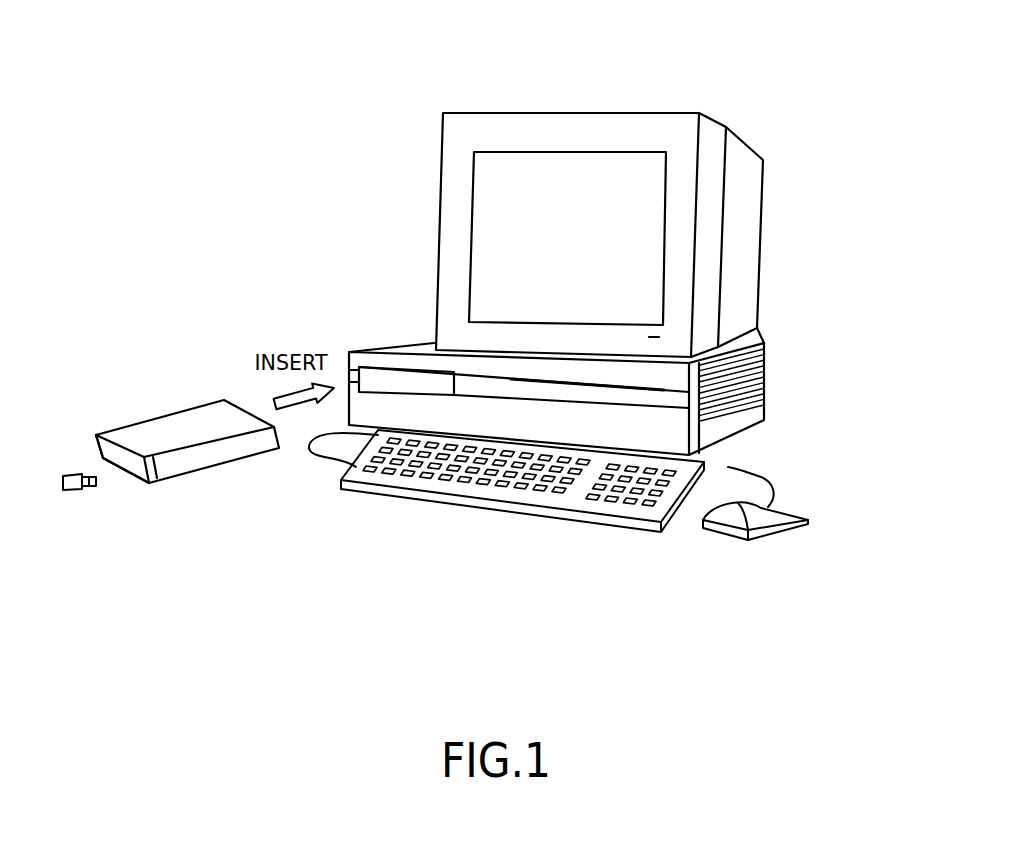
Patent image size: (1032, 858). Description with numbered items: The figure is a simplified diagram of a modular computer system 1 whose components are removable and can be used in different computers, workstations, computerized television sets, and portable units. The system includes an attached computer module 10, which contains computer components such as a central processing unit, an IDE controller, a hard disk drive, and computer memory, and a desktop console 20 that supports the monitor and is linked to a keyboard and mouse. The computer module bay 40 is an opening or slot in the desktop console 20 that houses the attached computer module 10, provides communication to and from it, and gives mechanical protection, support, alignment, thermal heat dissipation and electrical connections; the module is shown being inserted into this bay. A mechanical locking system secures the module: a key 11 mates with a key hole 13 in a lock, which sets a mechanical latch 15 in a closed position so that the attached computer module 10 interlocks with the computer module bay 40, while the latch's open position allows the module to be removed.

The computer system 1 is at (782, 82).
The attached computer module 10 is at (143, 483).
The key 11 is at (65, 473).
The key hole 13 is at (132, 455).
The mechanical latch 15 is at (155, 457).
The desktop console 20 is at (765, 370).
The computer module bay 40 is at (362, 357).